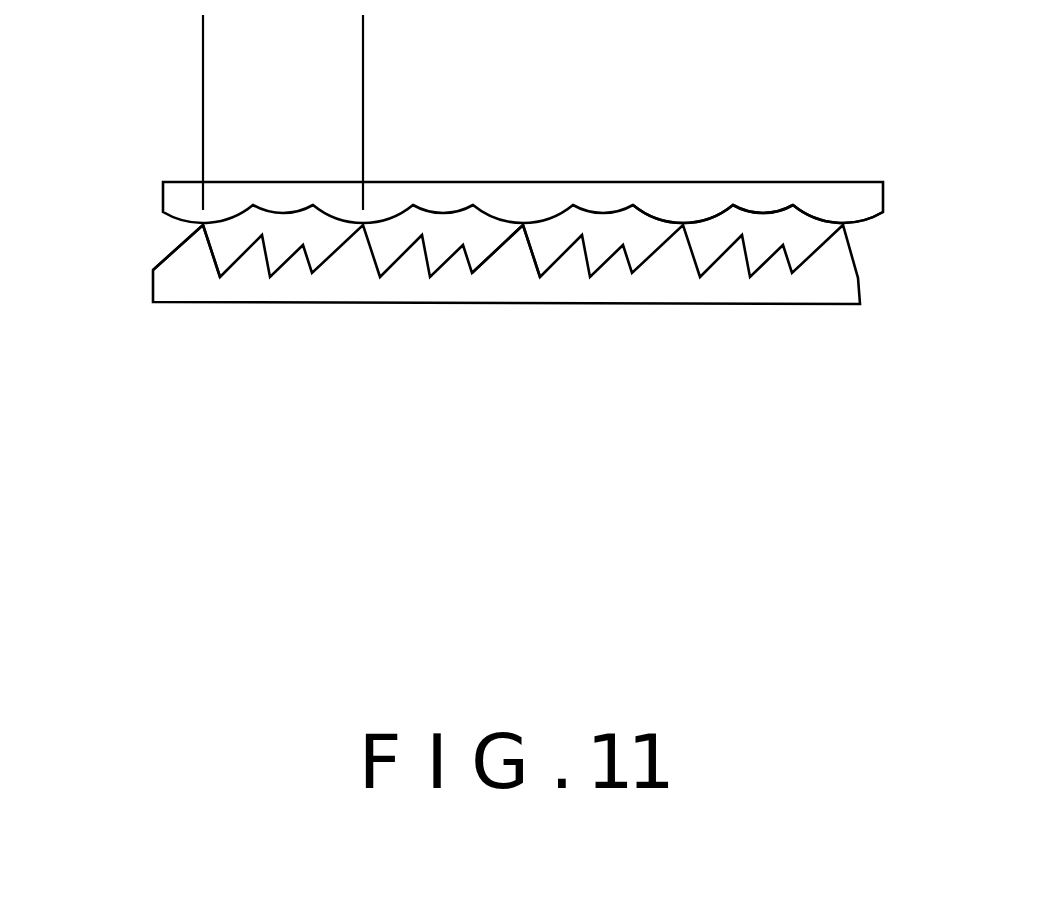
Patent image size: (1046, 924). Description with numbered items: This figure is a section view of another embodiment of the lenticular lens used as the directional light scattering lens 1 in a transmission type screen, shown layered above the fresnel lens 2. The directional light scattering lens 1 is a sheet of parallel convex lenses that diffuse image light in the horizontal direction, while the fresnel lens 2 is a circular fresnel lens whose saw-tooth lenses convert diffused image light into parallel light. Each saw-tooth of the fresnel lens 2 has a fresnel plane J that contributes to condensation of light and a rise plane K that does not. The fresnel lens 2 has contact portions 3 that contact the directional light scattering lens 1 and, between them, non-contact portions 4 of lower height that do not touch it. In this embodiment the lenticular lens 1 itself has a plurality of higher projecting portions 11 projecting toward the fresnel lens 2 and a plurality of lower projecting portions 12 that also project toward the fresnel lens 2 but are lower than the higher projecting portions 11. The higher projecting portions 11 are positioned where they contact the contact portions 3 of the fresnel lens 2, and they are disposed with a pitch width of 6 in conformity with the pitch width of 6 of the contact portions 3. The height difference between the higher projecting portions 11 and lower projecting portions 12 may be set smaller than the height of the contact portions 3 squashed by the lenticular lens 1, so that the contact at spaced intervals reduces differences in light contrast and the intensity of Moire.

The directional light scattering lens 1 is at (823, 202).
The fresnel lens 2 is at (768, 282).
The contact portion 3 is at (183, 230).
The non-contact portion 4 is at (231, 236).
The higher projecting portion 11 is at (853, 230).
The lower projecting portion 12 is at (764, 213).
The fresnel plane J is at (503, 238).
The rise plane K is at (528, 238).
The pitch width 6 is at (203, 45).